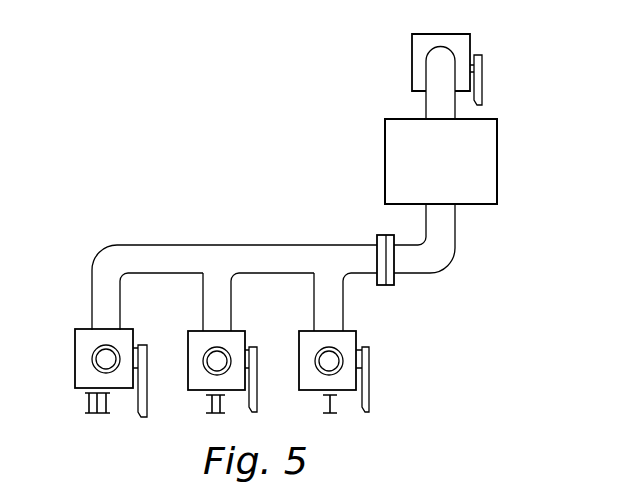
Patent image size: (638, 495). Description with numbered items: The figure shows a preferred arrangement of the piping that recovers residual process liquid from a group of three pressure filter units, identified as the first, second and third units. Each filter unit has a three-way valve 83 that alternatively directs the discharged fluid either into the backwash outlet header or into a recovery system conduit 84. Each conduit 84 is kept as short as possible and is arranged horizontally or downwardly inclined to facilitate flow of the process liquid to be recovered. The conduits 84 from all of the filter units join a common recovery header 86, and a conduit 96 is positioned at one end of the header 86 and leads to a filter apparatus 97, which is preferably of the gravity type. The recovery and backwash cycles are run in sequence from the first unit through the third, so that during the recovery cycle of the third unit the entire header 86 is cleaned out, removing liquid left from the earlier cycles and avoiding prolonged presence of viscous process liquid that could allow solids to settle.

The three-way valve 83 is at (83, 368).
The recovery system conduit 84 is at (112, 304).
The recovery header 86 is at (180, 252).
The conduit 96 is at (448, 229).
The filter apparatus 97 is at (488, 163).